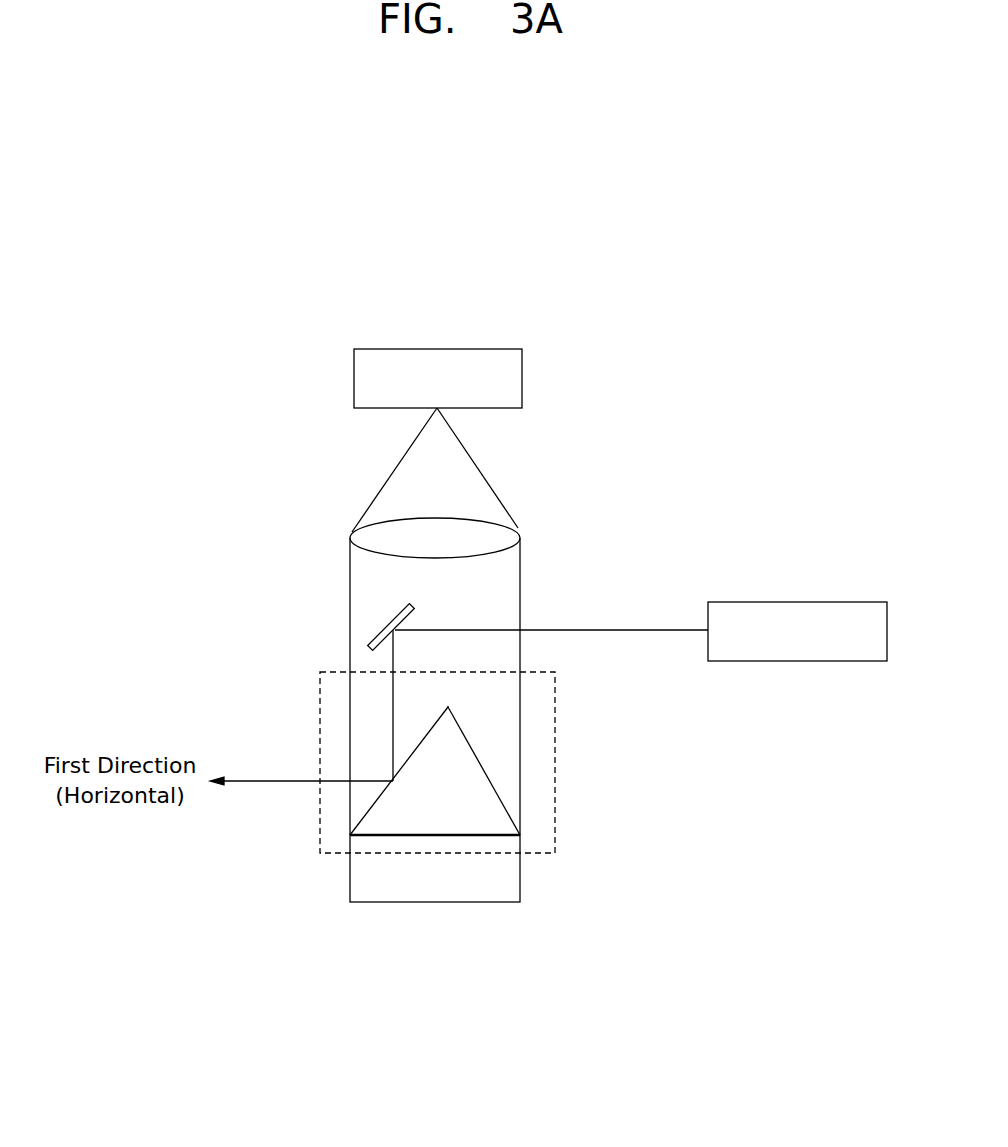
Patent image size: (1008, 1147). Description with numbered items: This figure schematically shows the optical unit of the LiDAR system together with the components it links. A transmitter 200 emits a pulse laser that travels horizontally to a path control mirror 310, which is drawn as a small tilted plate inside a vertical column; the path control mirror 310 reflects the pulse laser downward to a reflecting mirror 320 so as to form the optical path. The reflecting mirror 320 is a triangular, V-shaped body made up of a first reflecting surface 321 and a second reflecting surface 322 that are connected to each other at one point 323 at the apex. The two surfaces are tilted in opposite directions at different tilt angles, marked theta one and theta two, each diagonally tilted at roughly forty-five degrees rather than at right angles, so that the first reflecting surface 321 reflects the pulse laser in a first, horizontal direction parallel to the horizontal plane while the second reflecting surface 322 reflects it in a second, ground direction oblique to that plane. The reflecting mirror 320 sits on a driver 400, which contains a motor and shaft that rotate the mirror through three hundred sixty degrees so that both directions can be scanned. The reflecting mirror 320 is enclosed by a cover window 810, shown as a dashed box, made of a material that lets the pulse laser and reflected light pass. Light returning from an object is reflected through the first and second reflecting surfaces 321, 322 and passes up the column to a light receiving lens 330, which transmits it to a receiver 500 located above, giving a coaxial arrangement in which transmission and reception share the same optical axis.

The receiver 500 is at (435, 349).
The light receiving lens 330 is at (520, 538).
The path control mirror 310 is at (370, 640).
The transmitter 200 is at (795, 602).
The cover window 810 is at (538, 856).
The reflecting mirror 320 is at (530, 760).
The first reflecting surface 321 is at (422, 743).
The second reflecting surface 322 is at (497, 792).
The connection point of the reflecting surfaces 323 is at (448, 707).
The driver 400 is at (445, 905).